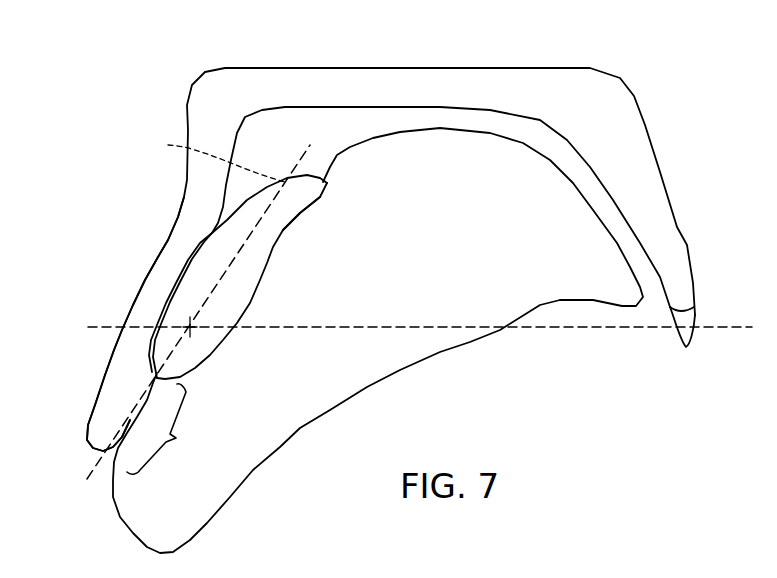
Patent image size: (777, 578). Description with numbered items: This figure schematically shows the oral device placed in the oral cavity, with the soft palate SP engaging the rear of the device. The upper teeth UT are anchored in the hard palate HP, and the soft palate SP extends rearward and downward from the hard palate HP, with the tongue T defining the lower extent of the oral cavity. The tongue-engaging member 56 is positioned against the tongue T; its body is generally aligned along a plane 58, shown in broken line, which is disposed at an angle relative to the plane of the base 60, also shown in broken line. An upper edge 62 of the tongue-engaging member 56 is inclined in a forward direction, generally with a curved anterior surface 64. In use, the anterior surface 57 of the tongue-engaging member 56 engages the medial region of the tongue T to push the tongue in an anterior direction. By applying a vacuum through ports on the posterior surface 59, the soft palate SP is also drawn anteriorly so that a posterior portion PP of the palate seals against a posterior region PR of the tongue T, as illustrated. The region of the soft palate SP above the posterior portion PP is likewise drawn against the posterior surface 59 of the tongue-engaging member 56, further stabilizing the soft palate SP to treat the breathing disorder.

The hard palate HP is at (310, 83).
The soft palate SP is at (170, 243).
The posterior portion of the palate PP is at (107, 410).
The posterior region of the tongue PR is at (165, 429).
The tongue T is at (283, 417).
The upper teeth UT is at (680, 333).
The tongue-engaging member 56 is at (243, 293).
The anterior surface 57 is at (264, 255).
The plane 58 is at (209, 158).
The posterior surface 59 is at (212, 233).
The plane of the base 60 is at (421, 328).
The upper edge 62 is at (321, 185).
The curved anterior surface 64 is at (290, 212).